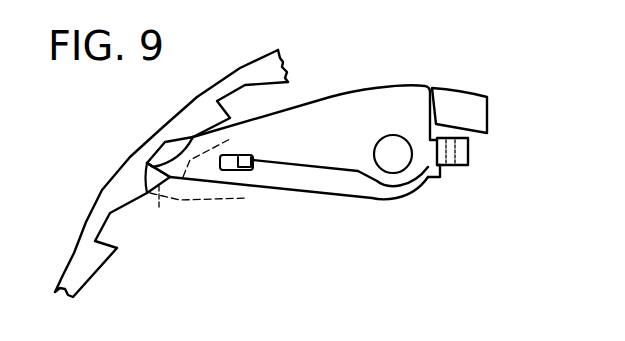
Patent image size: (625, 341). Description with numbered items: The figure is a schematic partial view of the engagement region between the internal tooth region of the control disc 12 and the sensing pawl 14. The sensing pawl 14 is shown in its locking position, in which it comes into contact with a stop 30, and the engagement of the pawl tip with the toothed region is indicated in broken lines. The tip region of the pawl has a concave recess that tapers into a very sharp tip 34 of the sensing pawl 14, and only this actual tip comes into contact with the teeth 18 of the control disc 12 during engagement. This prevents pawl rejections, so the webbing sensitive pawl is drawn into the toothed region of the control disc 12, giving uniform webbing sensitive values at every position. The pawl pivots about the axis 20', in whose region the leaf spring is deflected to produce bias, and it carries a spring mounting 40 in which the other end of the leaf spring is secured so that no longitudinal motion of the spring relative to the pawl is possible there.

The control disc 12 is at (255, 70).
The sensing pawl 14 is at (343, 100).
The teeth 18 is at (98, 252).
The axis 20' is at (384, 189).
The stop 30 is at (473, 103).
The sharp tip 34 is at (147, 193).
The spring mounting 40 is at (243, 170).